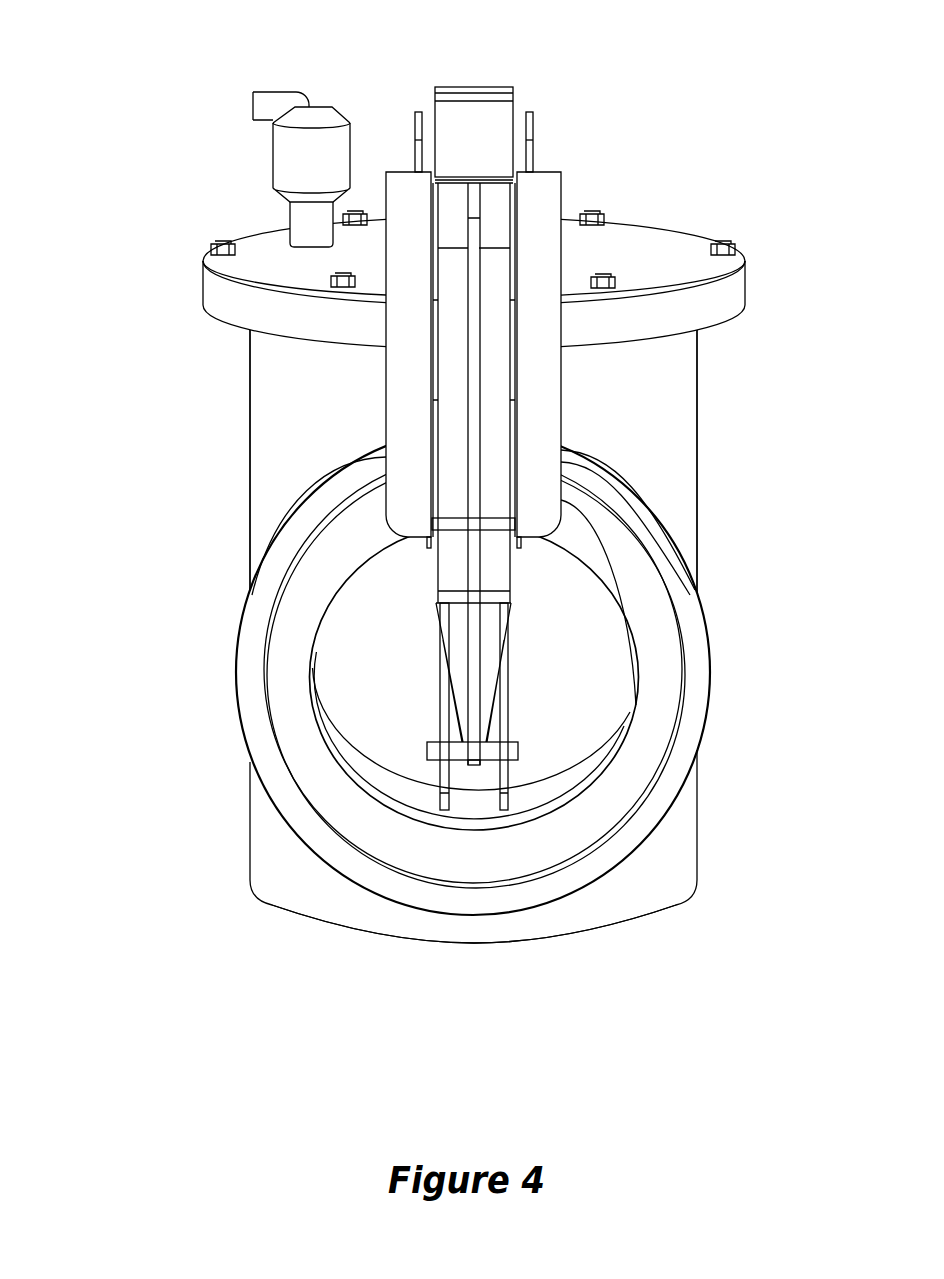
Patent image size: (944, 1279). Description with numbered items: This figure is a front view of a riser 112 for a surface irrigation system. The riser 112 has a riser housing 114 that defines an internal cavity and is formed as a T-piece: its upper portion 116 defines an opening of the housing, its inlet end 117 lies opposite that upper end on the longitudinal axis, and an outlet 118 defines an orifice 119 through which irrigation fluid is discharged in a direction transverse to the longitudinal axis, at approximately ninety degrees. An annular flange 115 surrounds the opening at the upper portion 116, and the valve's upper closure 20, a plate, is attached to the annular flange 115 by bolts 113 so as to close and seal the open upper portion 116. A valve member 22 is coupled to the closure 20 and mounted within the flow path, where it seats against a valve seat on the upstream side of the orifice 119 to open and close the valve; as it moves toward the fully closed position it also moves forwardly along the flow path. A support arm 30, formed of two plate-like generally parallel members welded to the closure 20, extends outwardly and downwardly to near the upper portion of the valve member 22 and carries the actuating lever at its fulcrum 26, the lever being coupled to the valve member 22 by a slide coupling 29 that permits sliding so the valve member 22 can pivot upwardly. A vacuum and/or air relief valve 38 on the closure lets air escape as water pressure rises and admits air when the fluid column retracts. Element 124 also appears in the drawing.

The riser 112 is at (446, 538).
The inlet pipe 124 is at (472, 112).
The vacuum and/or air relief valve 38 is at (295, 150).
The upper closure 20 is at (446, 282).
The bolts 113 is at (726, 247).
The annular flange 115 is at (212, 303).
The upper portion 116 is at (270, 341).
The support arm 30 is at (540, 403).
The fulcrum 26 is at (495, 527).
The outlet 118 is at (668, 636).
The valve member 22 is at (585, 697).
The slide coupling 29 is at (527, 745).
The riser housing 114 is at (275, 850).
The orifice 119 is at (424, 832).
The inlet end 117 is at (478, 974).